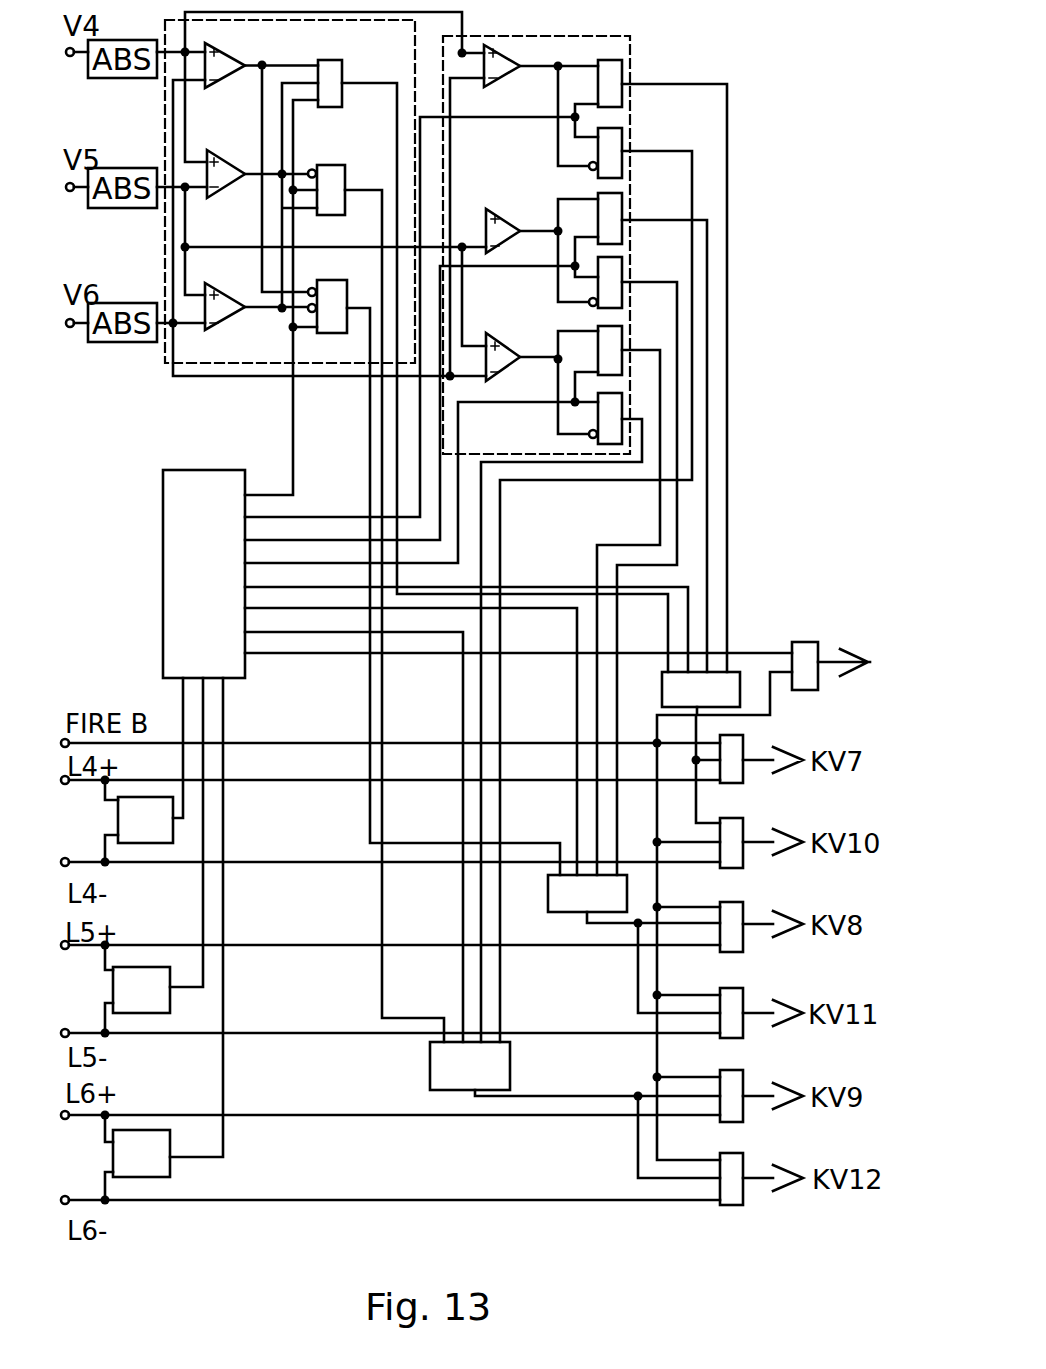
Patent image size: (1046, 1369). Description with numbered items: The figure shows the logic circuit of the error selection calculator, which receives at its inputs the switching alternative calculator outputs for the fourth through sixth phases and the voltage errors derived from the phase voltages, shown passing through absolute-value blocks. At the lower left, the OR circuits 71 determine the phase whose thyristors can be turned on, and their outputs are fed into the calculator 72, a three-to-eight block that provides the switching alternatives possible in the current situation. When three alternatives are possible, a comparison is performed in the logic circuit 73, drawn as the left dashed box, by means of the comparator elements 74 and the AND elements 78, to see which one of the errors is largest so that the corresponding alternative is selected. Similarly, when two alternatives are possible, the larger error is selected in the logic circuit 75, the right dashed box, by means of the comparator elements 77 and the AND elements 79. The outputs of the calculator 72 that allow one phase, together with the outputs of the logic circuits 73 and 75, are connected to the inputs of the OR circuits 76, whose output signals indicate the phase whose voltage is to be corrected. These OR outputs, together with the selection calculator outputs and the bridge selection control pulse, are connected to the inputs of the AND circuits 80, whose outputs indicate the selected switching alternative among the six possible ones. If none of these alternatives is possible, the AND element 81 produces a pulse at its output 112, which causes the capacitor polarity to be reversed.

The OR circuits 71 is at (168, 843).
The calculator 72 is at (163, 540).
The logic circuit 73 is at (172, 370).
The comparator elements 74 is at (225, 68).
The logic circuit 75 is at (628, 56).
The OR circuits 76 is at (662, 677).
The comparator elements 77 is at (510, 350).
The AND elements 78 is at (348, 283).
The AND elements 79 is at (624, 156).
The AND circuits 80 is at (732, 1207).
The AND element 81 is at (798, 640).
The output 112 is at (853, 647).